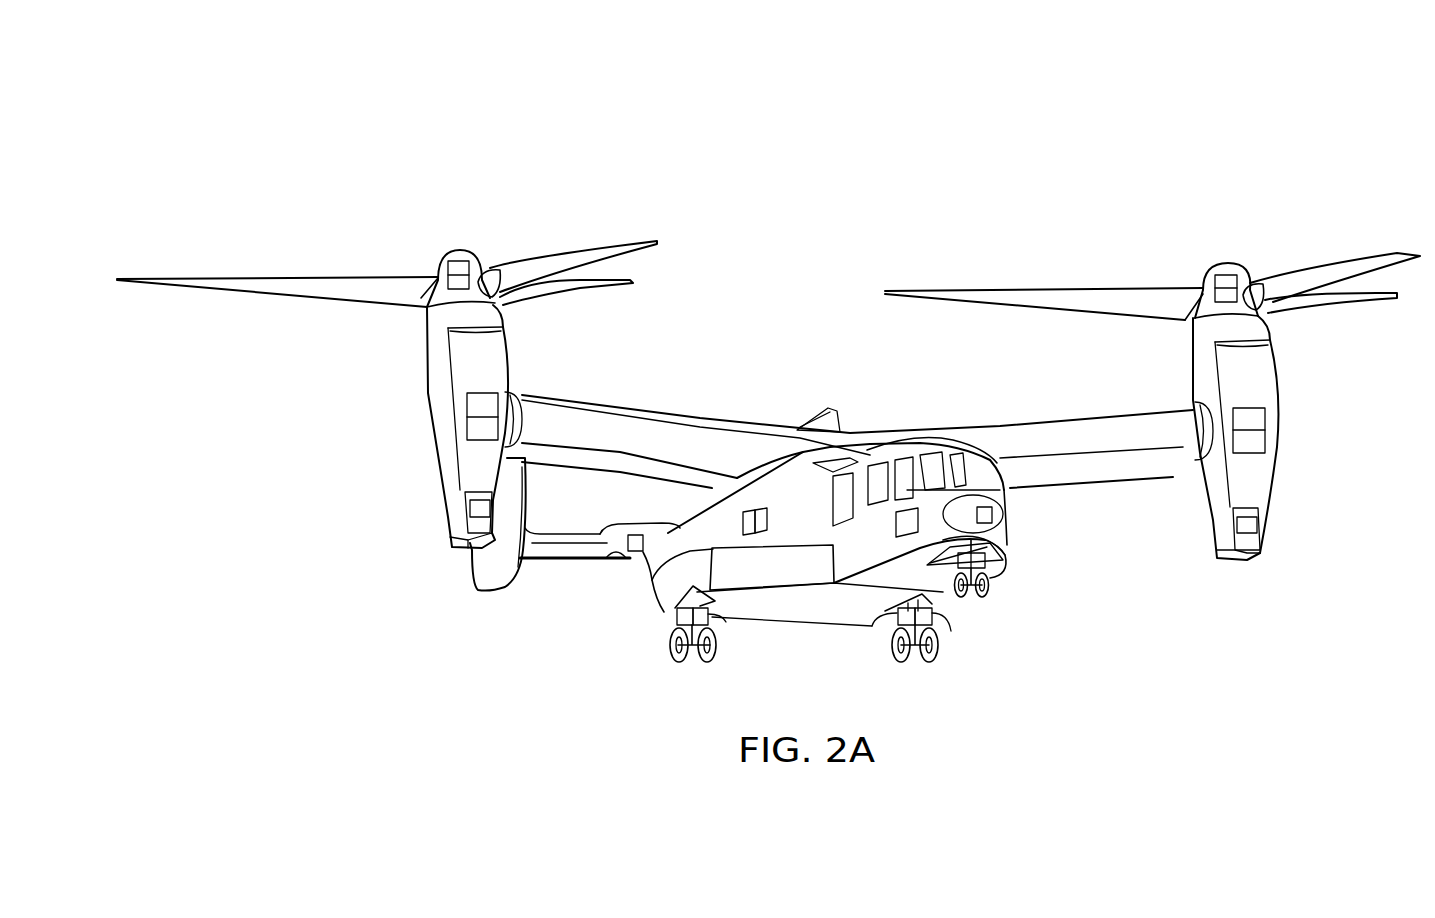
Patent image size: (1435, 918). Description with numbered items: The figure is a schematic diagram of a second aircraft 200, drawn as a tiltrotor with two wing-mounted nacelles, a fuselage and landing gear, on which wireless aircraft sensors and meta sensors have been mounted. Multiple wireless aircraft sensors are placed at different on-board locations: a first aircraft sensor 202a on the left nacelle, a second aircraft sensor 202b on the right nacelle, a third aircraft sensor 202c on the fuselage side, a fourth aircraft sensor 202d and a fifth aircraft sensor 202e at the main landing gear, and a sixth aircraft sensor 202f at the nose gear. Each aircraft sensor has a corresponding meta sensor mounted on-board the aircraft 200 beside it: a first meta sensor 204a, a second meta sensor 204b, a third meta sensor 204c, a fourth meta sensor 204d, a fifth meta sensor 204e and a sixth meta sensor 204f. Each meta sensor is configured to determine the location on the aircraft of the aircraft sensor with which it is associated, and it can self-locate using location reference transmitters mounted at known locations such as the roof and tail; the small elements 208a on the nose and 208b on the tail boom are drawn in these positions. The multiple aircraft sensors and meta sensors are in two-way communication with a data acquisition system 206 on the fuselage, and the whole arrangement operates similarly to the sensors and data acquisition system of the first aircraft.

The second aircraft 200 is at (868, 210).
The first aircraft sensor 202a is at (482, 393).
The second aircraft sensor 202b is at (1268, 418).
The third aircraft sensor 202c is at (747, 510).
The fourth aircraft sensor 202d is at (674, 617).
The fifth aircraft sensor 202e is at (896, 620).
The sixth aircraft sensor 202f is at (995, 530).
The first meta sensor 204a is at (467, 432).
The second meta sensor 204b is at (1250, 455).
The third meta sensor 204c is at (778, 512).
The fourth meta sensor 204d is at (709, 615).
The fifth meta sensor 204e is at (933, 617).
The sixth meta sensor 204f is at (988, 560).
The data acquisition system 206 is at (905, 505).
The sensor 208a is at (992, 505).
The sensor 208b is at (635, 552).